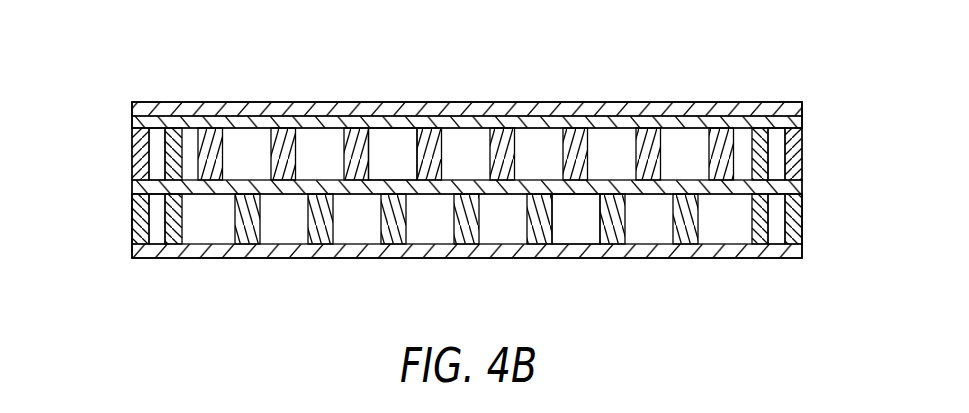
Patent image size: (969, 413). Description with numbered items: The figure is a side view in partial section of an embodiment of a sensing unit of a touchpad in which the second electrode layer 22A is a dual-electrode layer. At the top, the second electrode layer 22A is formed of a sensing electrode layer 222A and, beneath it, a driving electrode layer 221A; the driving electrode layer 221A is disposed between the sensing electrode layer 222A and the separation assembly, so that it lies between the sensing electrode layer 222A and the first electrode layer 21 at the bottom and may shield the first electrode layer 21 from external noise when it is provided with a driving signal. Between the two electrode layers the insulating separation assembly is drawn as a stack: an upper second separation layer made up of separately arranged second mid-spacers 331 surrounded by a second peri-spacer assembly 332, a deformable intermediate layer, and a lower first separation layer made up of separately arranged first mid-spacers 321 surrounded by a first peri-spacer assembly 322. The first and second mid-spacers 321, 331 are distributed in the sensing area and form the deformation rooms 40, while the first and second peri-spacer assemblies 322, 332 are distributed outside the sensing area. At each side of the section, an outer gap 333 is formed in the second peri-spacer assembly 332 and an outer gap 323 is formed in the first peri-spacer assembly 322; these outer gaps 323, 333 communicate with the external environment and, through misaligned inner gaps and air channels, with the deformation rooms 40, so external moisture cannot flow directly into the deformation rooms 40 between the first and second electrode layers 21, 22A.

The second electrode layer 22A is at (120, 92).
The sensing electrode layer 222A is at (192, 102).
The driving electrode layer 221A is at (132, 121).
The outer gap 333 is at (157, 162).
The second peri-spacer assembly 332 is at (795, 172).
The outer gap 323 is at (157, 221).
The first peri-spacer assembly 322 is at (792, 235).
The second mid-spacers 331 is at (645, 138).
The first mid-spacers 321 is at (683, 247).
The deformation rooms 40 is at (390, 138).
The first electrode layer 21 is at (638, 258).